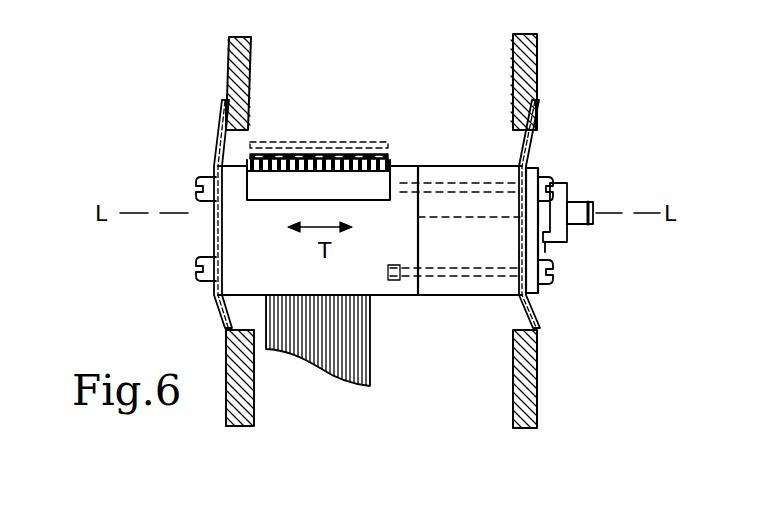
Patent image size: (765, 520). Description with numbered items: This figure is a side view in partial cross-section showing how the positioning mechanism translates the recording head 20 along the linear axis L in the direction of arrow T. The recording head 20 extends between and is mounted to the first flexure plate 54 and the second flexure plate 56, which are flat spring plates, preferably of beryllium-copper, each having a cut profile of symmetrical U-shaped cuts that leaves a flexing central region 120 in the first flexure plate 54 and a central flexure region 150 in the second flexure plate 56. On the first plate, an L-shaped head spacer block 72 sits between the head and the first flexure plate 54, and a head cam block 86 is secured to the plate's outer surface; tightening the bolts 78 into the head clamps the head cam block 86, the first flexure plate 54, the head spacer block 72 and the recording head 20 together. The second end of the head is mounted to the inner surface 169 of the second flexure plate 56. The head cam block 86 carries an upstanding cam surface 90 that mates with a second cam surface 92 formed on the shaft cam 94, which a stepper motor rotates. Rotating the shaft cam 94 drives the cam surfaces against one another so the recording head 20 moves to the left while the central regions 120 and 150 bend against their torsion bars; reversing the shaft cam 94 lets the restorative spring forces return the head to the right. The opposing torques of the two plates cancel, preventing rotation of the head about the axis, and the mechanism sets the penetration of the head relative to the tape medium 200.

The recording head 20 is at (396, 205).
The first flexure plate 54 is at (524, 150).
The second flexure plate 56 is at (222, 150).
The head spacer block 72 is at (463, 298).
The bolts 78 is at (548, 182).
The head cam block 86 is at (549, 265).
The cam surface 90 is at (560, 244).
The second cam surface 92 is at (566, 206).
The shaft cam 94 is at (575, 226).
The central region 120 is at (521, 248).
The central flexure region 150 is at (210, 232).
The inner surface 169 is at (248, 192).
The tape medium 200 is at (346, 142).